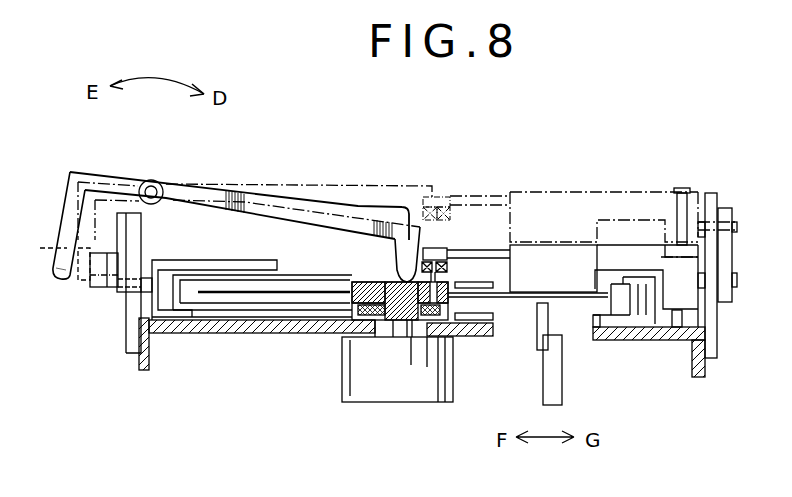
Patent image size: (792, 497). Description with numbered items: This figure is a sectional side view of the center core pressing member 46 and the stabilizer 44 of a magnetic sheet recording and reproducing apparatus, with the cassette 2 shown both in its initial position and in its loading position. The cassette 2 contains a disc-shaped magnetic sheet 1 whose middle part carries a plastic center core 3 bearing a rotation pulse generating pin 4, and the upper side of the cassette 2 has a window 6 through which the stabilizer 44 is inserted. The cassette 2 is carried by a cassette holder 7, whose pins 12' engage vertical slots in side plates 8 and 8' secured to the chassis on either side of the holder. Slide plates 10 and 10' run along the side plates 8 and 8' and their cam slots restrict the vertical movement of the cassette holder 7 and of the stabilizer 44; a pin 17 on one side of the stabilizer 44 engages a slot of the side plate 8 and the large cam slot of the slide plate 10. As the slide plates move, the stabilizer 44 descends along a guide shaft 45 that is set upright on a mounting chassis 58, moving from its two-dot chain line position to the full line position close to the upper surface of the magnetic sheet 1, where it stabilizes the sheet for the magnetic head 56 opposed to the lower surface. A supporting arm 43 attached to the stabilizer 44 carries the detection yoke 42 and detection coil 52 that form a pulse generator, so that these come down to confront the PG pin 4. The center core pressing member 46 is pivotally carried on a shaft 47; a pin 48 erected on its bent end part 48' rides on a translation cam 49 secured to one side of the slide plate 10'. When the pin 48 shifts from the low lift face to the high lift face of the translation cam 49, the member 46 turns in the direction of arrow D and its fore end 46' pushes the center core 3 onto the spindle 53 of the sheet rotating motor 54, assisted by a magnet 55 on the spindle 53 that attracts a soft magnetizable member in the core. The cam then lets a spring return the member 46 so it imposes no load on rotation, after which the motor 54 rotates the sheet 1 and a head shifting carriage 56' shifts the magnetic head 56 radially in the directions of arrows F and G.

The magnetic sheet 1 is at (517, 298).
The cassette 2 is at (291, 277).
The center core 3 is at (360, 282).
The rotation pulse generating pin 4 is at (450, 307).
The stabilizer inserting window 6 is at (590, 320).
The cassette holder 7 is at (213, 262).
The side plate 8 is at (710, 252).
The side plate 8' is at (153, 283).
The slide plate 10 is at (730, 232).
The slide plate 10' is at (72, 230).
The pin 12' is at (316, 335).
The pin 17 is at (737, 280).
The detection yoke 42 is at (432, 253).
The supporting arm 43 is at (473, 253).
The stabilizer 44 is at (610, 255).
The guide shaft 45 is at (679, 188).
The center core pressing member 46 is at (242, 216).
The fore end 46' is at (389, 254).
The shaft 47 is at (152, 186).
The pin 48 is at (47, 230).
The bent end part 48' is at (49, 299).
The translation cam 49 is at (100, 283).
The detection coil 52 is at (452, 267).
The spindle 53 is at (391, 322).
The sheet rotating motor 54 is at (402, 398).
The magnet 55 is at (370, 308).
The magnetic head 56 is at (617, 310).
The head shifting carriage 56' is at (579, 370).
The mounting chassis 58 is at (660, 341).